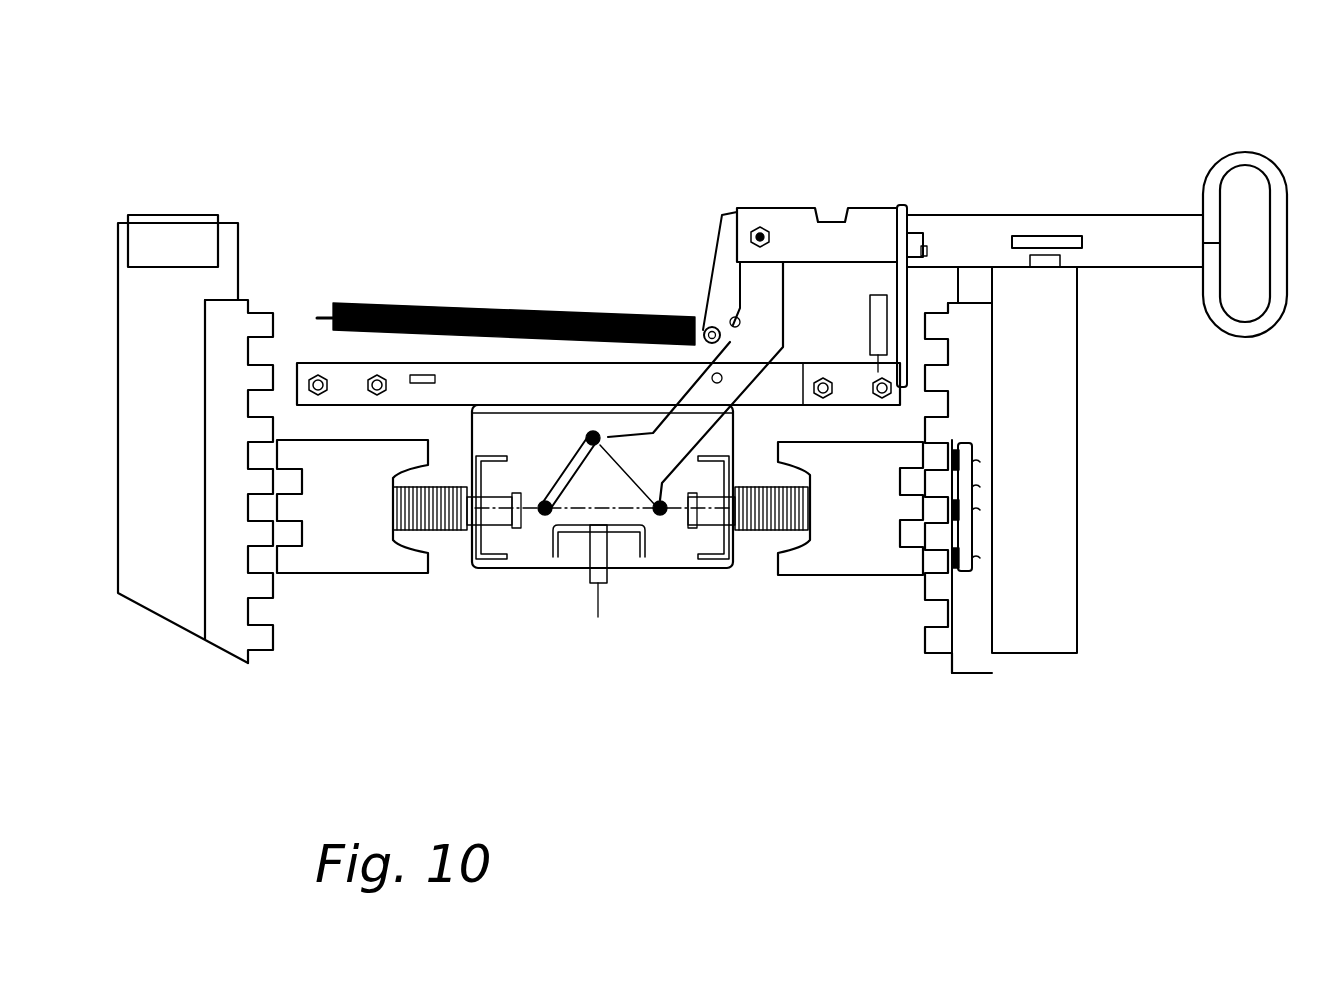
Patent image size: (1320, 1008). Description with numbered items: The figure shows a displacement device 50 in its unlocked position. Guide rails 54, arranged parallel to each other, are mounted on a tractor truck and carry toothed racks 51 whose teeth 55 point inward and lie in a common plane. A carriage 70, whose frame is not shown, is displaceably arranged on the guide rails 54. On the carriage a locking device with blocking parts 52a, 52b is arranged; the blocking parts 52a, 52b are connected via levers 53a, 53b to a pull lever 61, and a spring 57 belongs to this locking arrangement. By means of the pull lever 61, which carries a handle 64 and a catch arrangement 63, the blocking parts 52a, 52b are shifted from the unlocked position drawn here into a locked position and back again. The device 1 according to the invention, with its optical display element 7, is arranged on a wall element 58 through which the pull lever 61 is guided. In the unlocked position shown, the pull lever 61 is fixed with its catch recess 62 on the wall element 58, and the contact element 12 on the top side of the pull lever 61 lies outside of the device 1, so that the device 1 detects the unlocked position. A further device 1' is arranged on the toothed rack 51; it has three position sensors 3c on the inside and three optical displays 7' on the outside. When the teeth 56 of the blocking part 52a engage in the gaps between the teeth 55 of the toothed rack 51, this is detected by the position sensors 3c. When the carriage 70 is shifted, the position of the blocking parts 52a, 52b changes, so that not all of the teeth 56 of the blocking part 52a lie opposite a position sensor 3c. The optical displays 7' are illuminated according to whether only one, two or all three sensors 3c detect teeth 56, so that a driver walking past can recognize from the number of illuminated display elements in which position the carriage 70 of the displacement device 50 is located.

The displacement device 50 is at (268, 106).
The guide rail 54 is at (155, 617).
The tooth 55 is at (262, 318).
The toothed rack 51 is at (278, 637).
The blocking part 52a is at (822, 560).
The blocking part 52b is at (378, 575).
The tooth 56 is at (288, 557).
The carriage 70 is at (450, 530).
The lever 53a is at (683, 393).
The lever 53b is at (548, 500).
The spring 57 is at (463, 385).
The catch recess 62 is at (843, 213).
The wall element 58 is at (898, 205).
The pull lever 61 is at (1143, 238).
The optical display element 7 is at (961, 178).
The device 1 is at (943, 166).
The contact element 12 is at (1070, 238).
The catch arrangement 63 is at (1045, 267).
The handle 64 is at (1262, 322).
The position sensor 3c is at (975, 455).
The optical display element 7' is at (1093, 469).
The device 1' is at (1068, 456).